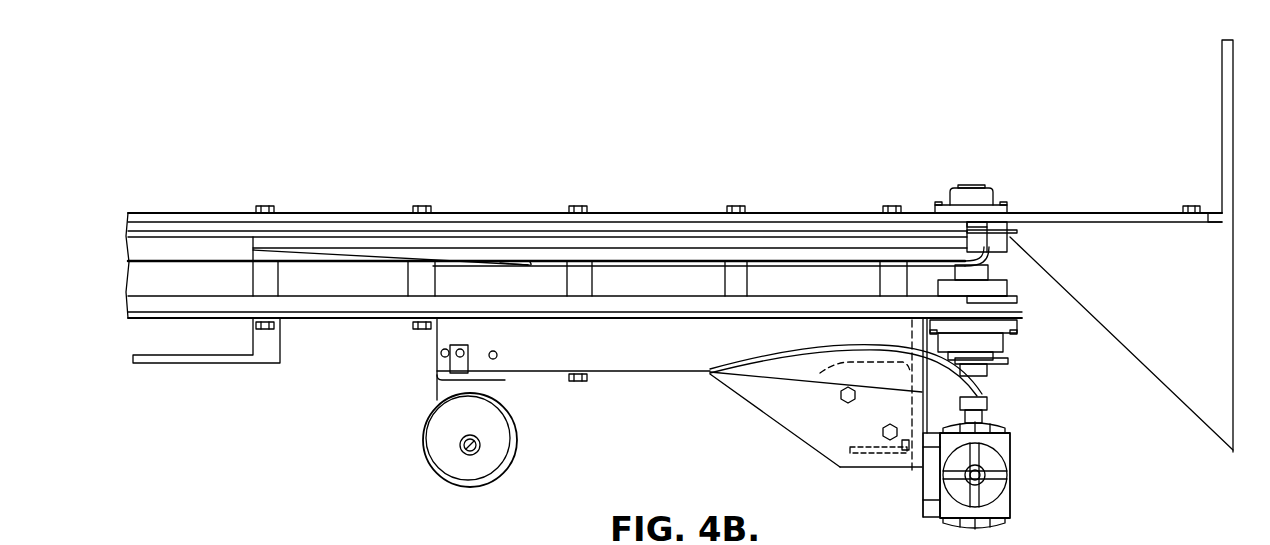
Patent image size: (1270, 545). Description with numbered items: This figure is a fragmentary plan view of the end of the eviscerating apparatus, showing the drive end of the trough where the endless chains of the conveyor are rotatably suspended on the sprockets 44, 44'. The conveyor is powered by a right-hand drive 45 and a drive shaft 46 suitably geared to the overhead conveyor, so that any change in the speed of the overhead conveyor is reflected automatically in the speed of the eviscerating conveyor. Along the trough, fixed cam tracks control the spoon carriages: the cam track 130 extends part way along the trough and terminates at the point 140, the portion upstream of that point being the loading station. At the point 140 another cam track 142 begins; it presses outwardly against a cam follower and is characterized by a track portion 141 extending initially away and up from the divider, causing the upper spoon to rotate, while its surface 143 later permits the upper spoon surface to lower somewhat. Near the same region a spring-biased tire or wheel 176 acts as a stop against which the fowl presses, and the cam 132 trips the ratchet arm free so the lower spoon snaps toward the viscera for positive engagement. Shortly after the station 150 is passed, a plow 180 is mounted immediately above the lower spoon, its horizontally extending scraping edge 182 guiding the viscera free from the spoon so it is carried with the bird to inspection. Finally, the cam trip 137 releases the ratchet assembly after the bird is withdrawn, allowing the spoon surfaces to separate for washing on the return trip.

The cam track 130 is at (674, 288).
The point (station) 140 is at (283, 195).
The station 150 is at (595, 195).
The track portion 141 is at (390, 271).
The surface of cam 143 is at (528, 265).
The cam track 142 is at (618, 271).
The sprocket 44' is at (1013, 225).
The sprocket 44 is at (997, 320).
The cam 132 is at (505, 384).
The tire or wheel 176 is at (498, 457).
The cam trip 137 is at (822, 372).
The plow 180 is at (731, 396).
The scraping edge 182 is at (787, 433).
The right-hand drive 45 is at (1022, 495).
The drive shaft 46 is at (984, 471).